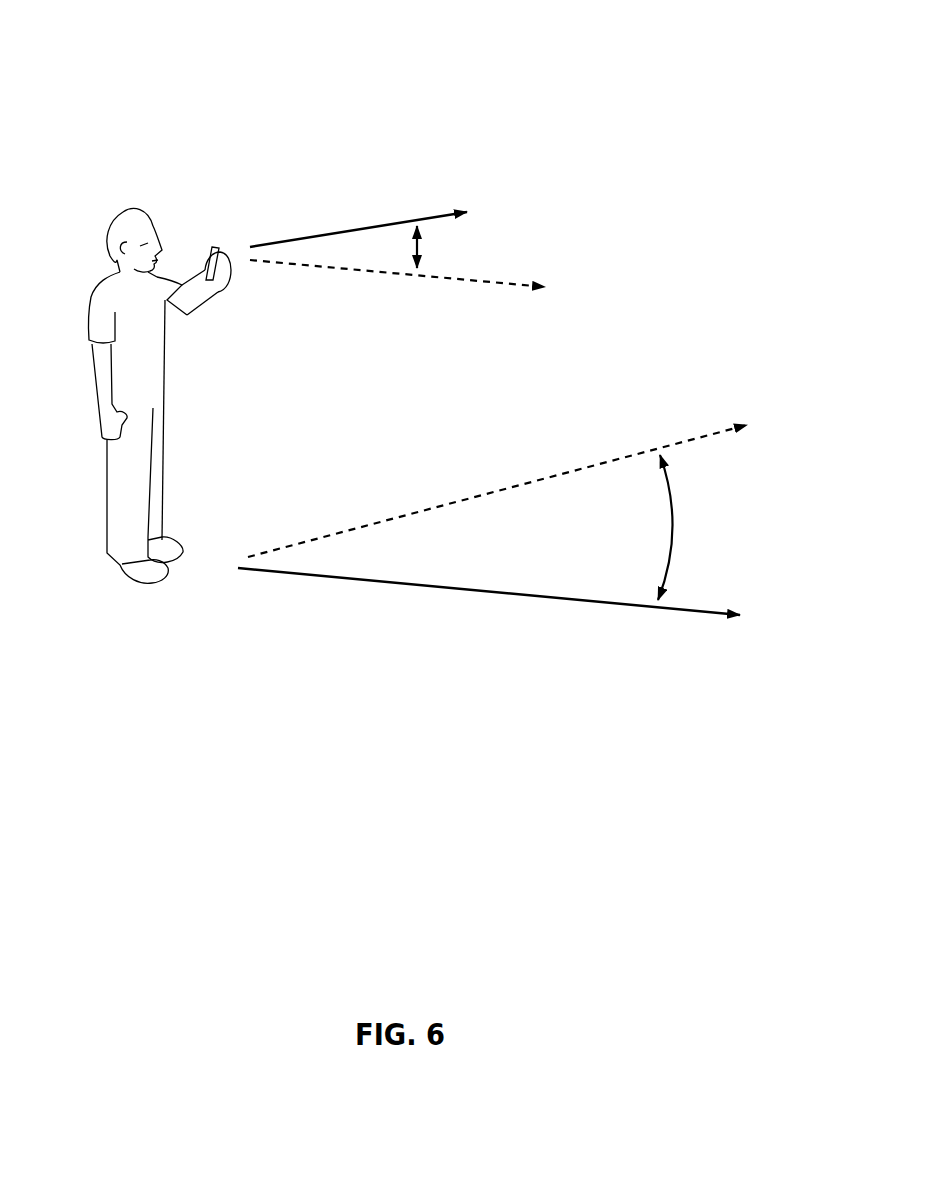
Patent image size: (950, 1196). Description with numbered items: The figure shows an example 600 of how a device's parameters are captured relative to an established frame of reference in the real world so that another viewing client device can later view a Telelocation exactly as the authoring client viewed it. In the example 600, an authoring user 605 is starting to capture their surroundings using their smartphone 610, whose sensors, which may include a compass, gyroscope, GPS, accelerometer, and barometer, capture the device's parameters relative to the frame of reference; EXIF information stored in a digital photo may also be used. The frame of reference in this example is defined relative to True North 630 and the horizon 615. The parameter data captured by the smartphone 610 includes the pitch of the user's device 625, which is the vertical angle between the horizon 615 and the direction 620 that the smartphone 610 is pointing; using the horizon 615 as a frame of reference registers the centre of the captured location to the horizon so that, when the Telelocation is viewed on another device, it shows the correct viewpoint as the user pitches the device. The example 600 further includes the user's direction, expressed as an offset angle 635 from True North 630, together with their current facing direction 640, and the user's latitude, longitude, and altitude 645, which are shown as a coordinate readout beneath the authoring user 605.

The example 600 is at (131, 59).
The authoring user 605 is at (116, 221).
The smartphone 610 is at (220, 234).
The horizon 615 is at (444, 212).
The direction the user's device is pointing 620 is at (526, 273).
The pitch of the user's device 625 is at (425, 248).
The True North 630 is at (682, 428).
The offset angle 635 is at (682, 522).
The current facing direction 640 is at (716, 604).
The latitude, longitude, and altitude 645 is at (318, 692).